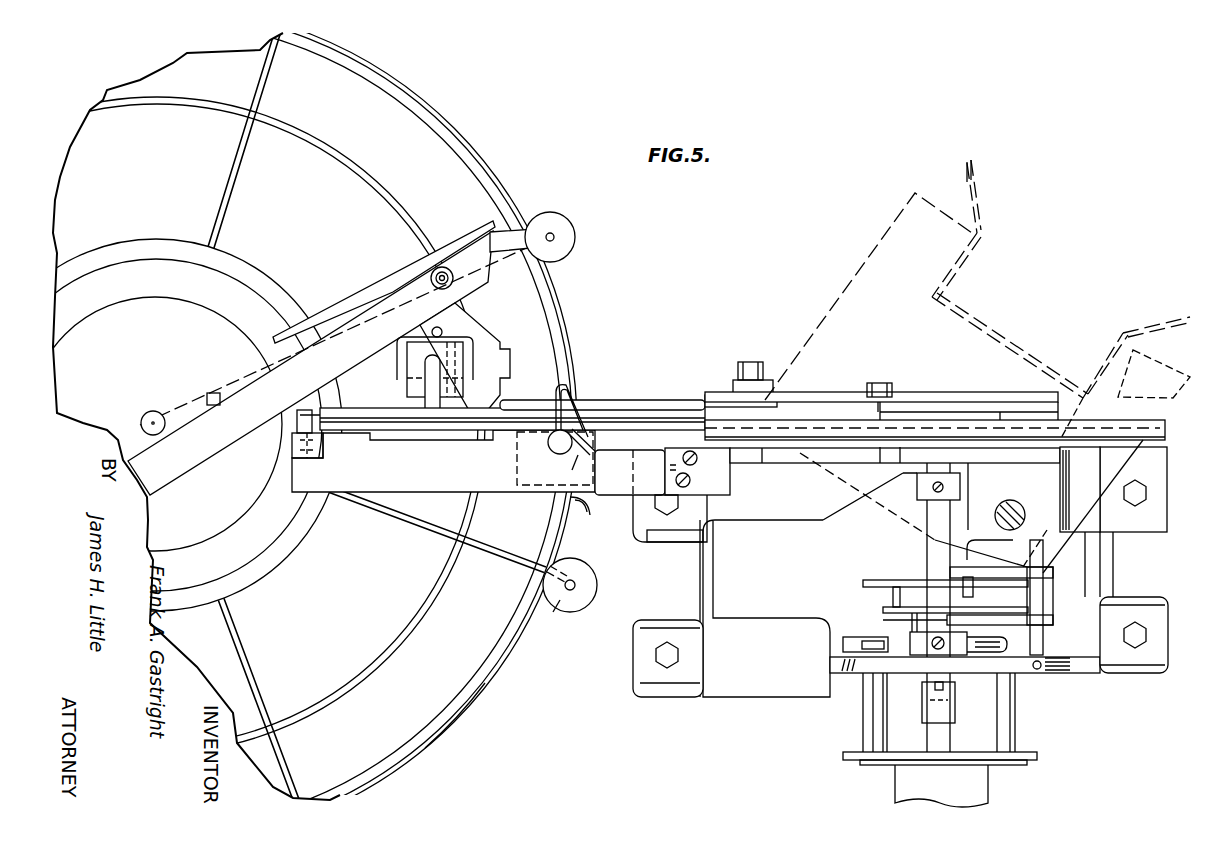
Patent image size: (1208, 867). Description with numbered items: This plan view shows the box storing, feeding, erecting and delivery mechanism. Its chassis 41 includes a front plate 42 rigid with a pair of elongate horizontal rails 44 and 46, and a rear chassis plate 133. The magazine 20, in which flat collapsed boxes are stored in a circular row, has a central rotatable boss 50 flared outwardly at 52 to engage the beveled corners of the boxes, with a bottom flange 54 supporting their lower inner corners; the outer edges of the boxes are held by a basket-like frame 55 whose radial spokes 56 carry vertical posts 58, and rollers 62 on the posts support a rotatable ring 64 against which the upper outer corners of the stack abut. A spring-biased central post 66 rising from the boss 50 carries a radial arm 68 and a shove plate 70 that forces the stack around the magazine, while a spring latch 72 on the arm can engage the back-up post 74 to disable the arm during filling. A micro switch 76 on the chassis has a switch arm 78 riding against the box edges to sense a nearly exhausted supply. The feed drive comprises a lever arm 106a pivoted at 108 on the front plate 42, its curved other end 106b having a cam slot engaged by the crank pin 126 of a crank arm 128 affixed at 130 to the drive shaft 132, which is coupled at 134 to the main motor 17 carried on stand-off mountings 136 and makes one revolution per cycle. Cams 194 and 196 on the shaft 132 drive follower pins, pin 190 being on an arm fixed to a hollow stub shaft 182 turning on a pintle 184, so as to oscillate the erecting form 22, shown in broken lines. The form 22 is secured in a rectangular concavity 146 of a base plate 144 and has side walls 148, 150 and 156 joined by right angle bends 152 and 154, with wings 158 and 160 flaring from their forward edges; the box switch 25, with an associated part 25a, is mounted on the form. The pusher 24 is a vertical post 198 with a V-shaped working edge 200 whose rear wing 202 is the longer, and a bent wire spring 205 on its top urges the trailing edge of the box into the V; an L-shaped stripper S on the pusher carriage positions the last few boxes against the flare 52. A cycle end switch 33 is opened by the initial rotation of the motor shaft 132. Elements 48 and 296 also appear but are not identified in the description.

The main motor 17 is at (950, 785).
The magazine 20 is at (288, 425).
The erecting form 22 is at (980, 300).
The pusher 24 is at (535, 452).
The box switch 25 is at (1178, 369).
The bracket portion 25a is at (1100, 352).
The cycle end switch 33 is at (852, 624).
The chassis 41 is at (732, 503).
The front plate 42 is at (752, 465).
The horizontal rail 44 is at (633, 520).
The horizontal rail 46 is at (642, 620).
The nut 48 is at (662, 512).
The central rotatable boss 50 is at (198, 336).
The outward flare 52 is at (198, 292).
The bottom flange 54 is at (260, 283).
The basket-like frame 55 is at (501, 177).
The radial spokes 56 is at (226, 209).
The vertical posts 58 is at (573, 612).
The rollers 62 is at (545, 618).
The rotatable ring 64 is at (504, 645).
The central post 66 is at (142, 421).
The radial arm 68 is at (208, 449).
The shove plate 70 is at (412, 282).
The spring latch 72 is at (484, 341).
The back-up post 74 is at (427, 345).
The micro switch 76 is at (630, 472).
The switch arm 78 is at (578, 500).
The lever arm 106a is at (715, 397).
The lever end 106b is at (940, 384).
The pivot 108 is at (752, 362).
The crank pin 126 is at (878, 384).
The crank arm 128 is at (870, 386).
The crank arm attachment 130 is at (1012, 412).
The drive shaft 132 is at (925, 522).
The rear chassis plate 133 is at (860, 673).
The coupling 134 is at (922, 700).
The stand-off mountings 136 is at (862, 712).
The base plate 144 is at (845, 290).
The rectangular concavity 146 is at (998, 205).
The side wall 148 is at (1120, 331).
The side wall 150 is at (1030, 354).
The right angle bend 152 is at (1100, 364).
The right angle bend 154 is at (950, 294).
The side wall 156 is at (960, 259).
The wing 158 is at (965, 181).
The wing 160 is at (1170, 318).
The hollow stub shaft 182 is at (1050, 618).
The pintle 184 is at (1050, 578).
The cam follower pin 190 is at (1003, 597).
The cam 194 is at (883, 609).
The second cam 196 is at (866, 580).
The pusher post 198 is at (566, 441).
The V-shaped working edge 200 is at (732, 431).
The rear wing 202 is at (587, 472).
The bent wire spring 205 is at (591, 408).
The shaft 296 is at (998, 660).
The stripper S is at (505, 463).